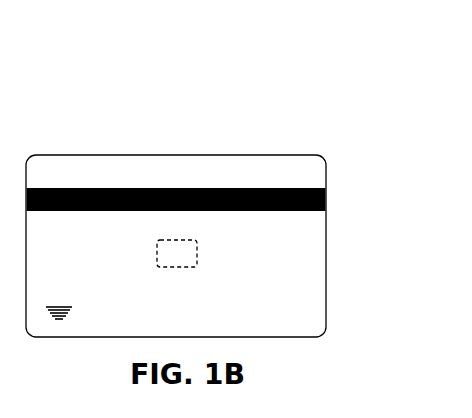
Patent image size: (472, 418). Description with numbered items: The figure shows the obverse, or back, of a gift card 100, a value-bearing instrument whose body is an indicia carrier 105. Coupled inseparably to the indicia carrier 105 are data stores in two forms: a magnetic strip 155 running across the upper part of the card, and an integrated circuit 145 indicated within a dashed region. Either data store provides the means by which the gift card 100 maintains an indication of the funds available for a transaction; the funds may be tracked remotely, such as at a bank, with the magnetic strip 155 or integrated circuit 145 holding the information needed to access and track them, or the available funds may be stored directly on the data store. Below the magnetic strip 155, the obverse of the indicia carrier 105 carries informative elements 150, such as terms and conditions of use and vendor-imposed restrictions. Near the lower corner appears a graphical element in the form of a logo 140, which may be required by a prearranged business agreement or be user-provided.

The gift card 100 is at (266, 82).
The indicia carrier 105 is at (253, 155).
The magnetic strip 155 is at (326, 201).
The informative elements 150 is at (305, 239).
The integrated circuit 145 is at (197, 254).
The logo 140 is at (58, 320).